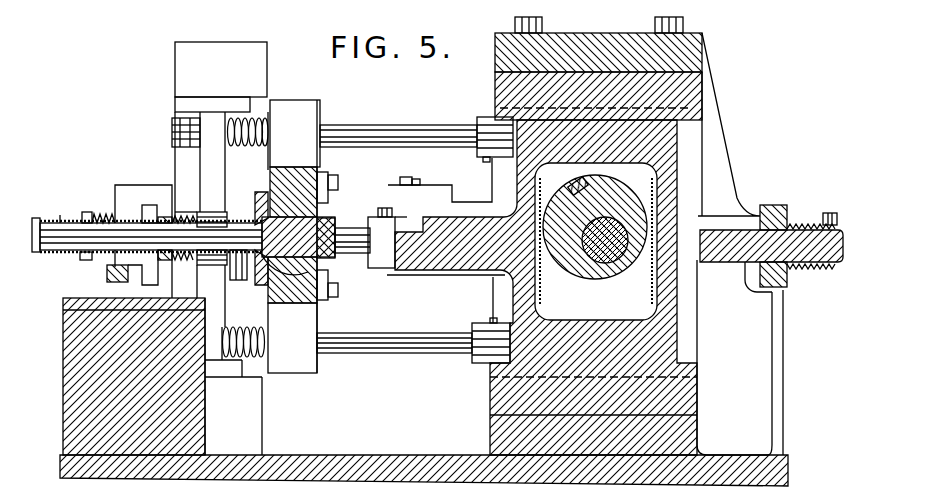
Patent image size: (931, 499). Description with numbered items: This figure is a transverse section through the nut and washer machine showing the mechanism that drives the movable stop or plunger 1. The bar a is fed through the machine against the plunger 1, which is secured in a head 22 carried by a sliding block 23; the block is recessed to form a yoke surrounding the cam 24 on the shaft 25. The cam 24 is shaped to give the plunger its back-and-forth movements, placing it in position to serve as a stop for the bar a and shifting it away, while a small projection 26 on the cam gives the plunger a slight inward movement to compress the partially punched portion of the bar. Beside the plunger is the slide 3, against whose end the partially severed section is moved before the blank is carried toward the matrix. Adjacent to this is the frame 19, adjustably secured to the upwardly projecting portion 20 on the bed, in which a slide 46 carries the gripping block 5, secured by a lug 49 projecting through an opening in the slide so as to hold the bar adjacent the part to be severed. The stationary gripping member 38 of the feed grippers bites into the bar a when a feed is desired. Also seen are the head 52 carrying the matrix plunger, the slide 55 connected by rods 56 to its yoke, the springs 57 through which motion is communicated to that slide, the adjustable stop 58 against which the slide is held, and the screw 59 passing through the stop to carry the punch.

The movable stop 1 is at (360, 232).
The slide 3 is at (335, 224).
The movable gripping member 5 is at (262, 290).
The frame 19 is at (320, 110).
The upwardly projecting portion 20 is at (262, 108).
The head 22 is at (384, 268).
The sliding block 23 is at (660, 337).
The cam 24 is at (598, 279).
The shaft 25 is at (607, 222).
The small projection 26 is at (572, 183).
The stationary gripping member 38 is at (148, 205).
The slide 46 is at (250, 198).
The lug 49 is at (263, 215).
The head 52 is at (437, 194).
The slide 55 is at (210, 163).
The rods 56 is at (427, 130).
The springs 57 is at (243, 380).
The adjustable stop 58 is at (100, 212).
The screw 59 is at (35, 252).
The bar a is at (54, 206).